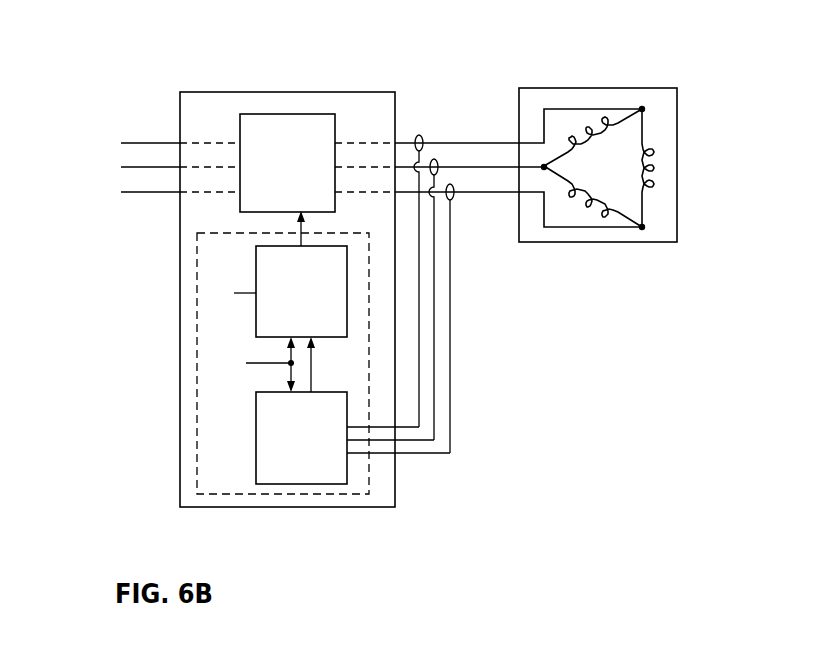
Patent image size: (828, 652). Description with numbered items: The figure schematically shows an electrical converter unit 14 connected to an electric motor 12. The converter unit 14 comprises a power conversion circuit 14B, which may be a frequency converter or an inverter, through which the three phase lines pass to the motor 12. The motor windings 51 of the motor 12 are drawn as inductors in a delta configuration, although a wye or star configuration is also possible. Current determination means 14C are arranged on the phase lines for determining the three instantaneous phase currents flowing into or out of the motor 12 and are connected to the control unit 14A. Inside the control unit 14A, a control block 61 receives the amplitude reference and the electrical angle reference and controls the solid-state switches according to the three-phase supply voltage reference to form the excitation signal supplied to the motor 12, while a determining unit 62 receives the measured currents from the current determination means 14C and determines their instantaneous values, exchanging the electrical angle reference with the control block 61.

The electrical converter unit 14 is at (258, 92).
The control unit 14A is at (197, 355).
The power conversion circuit 14B is at (287, 180).
The current determination means 14C is at (435, 114).
The electric motor 12 is at (587, 88).
The motor windings 51 is at (668, 199).
The control block 61 is at (301, 291).
The determining unit 62 is at (353, 438).